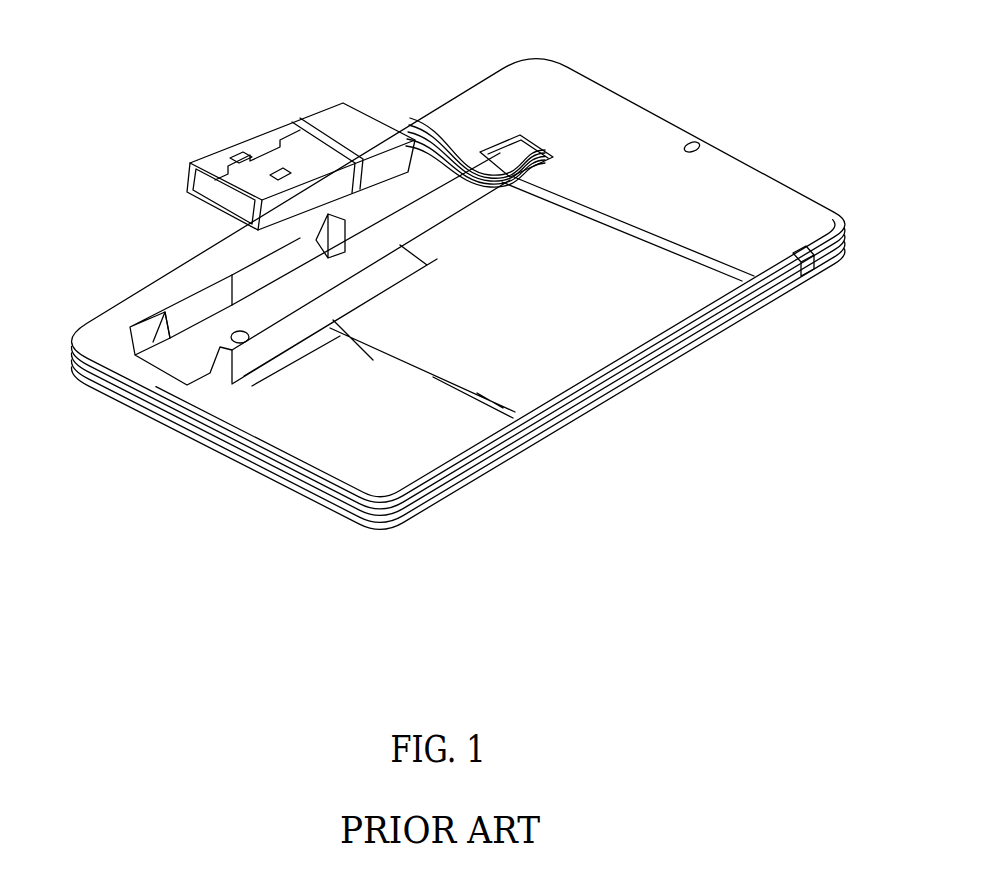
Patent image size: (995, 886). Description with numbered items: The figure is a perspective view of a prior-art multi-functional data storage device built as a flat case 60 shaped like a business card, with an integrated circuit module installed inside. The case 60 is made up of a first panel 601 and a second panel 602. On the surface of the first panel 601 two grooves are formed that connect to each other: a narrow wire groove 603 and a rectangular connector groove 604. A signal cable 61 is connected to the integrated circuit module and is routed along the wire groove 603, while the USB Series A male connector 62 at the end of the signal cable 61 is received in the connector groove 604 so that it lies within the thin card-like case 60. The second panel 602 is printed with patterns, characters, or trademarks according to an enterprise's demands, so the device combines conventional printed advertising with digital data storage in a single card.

The flat case 60 is at (640, 79).
The first panel 601 is at (595, 372).
The second panel 602 is at (467, 483).
The wire groove 603 is at (433, 217).
The connector groove 604 is at (205, 300).
The signal cable 61 is at (410, 130).
The USB Series A male connector 62 is at (265, 130).